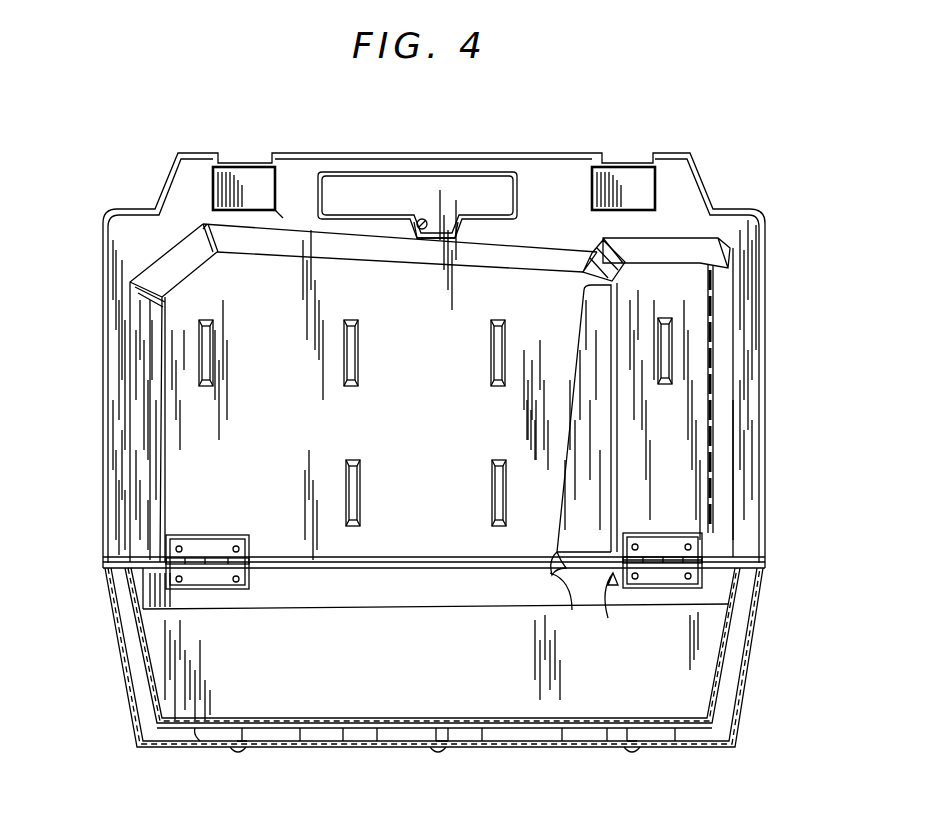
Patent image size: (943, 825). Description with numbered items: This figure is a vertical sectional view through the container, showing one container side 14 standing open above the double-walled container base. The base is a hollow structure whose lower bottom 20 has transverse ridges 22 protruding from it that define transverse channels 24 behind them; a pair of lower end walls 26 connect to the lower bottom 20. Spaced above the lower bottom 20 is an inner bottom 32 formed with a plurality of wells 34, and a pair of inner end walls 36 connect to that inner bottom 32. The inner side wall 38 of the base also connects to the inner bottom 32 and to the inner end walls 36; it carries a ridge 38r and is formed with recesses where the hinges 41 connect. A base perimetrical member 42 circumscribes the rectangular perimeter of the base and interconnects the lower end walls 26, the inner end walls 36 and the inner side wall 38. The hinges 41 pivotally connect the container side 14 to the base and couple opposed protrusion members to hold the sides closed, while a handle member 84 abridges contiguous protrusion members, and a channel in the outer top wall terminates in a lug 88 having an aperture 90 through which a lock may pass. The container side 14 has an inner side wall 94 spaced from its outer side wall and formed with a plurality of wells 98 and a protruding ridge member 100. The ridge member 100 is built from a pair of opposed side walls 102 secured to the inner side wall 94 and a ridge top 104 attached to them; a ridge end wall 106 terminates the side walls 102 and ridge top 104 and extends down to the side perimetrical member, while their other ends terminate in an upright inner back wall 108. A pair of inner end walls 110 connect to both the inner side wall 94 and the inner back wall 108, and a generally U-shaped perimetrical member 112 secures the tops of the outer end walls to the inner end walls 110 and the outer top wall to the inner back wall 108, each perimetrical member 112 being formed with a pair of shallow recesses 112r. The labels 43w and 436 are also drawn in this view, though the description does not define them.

The container side 14 is at (768, 328).
The perimetrical member 112 is at (270, 203).
The shallow recess 112r is at (220, 163).
The handle member 84 is at (470, 168).
The aperture 90 is at (424, 220).
The lug 88 is at (416, 240).
The inner back wall 108 is at (328, 255).
The ridge side wall 102 is at (582, 297).
The ridge top 104 is at (602, 352).
The ridge end wall 106 is at (550, 573).
The hook 43w is at (657, 648).
The inner side wall 94 is at (430, 432).
The inner end wall 110 is at (143, 503).
The ridge member 100 is at (570, 423).
The well 98 is at (353, 380).
The base perimetrical member 42 is at (105, 567).
The hinge 41 is at (203, 537).
The hinge pin 436 is at (647, 553).
The lower bottom 20 is at (320, 740).
The lower end wall 26 is at (123, 663).
The inner side wall 38 is at (293, 597).
The ridge 38r is at (385, 610).
The inner bottom 32 is at (377, 723).
The inner end wall 36 is at (153, 675).
The transverse channel 24 is at (237, 745).
The well 34 is at (290, 733).
The transverse ridge 22 is at (242, 757).